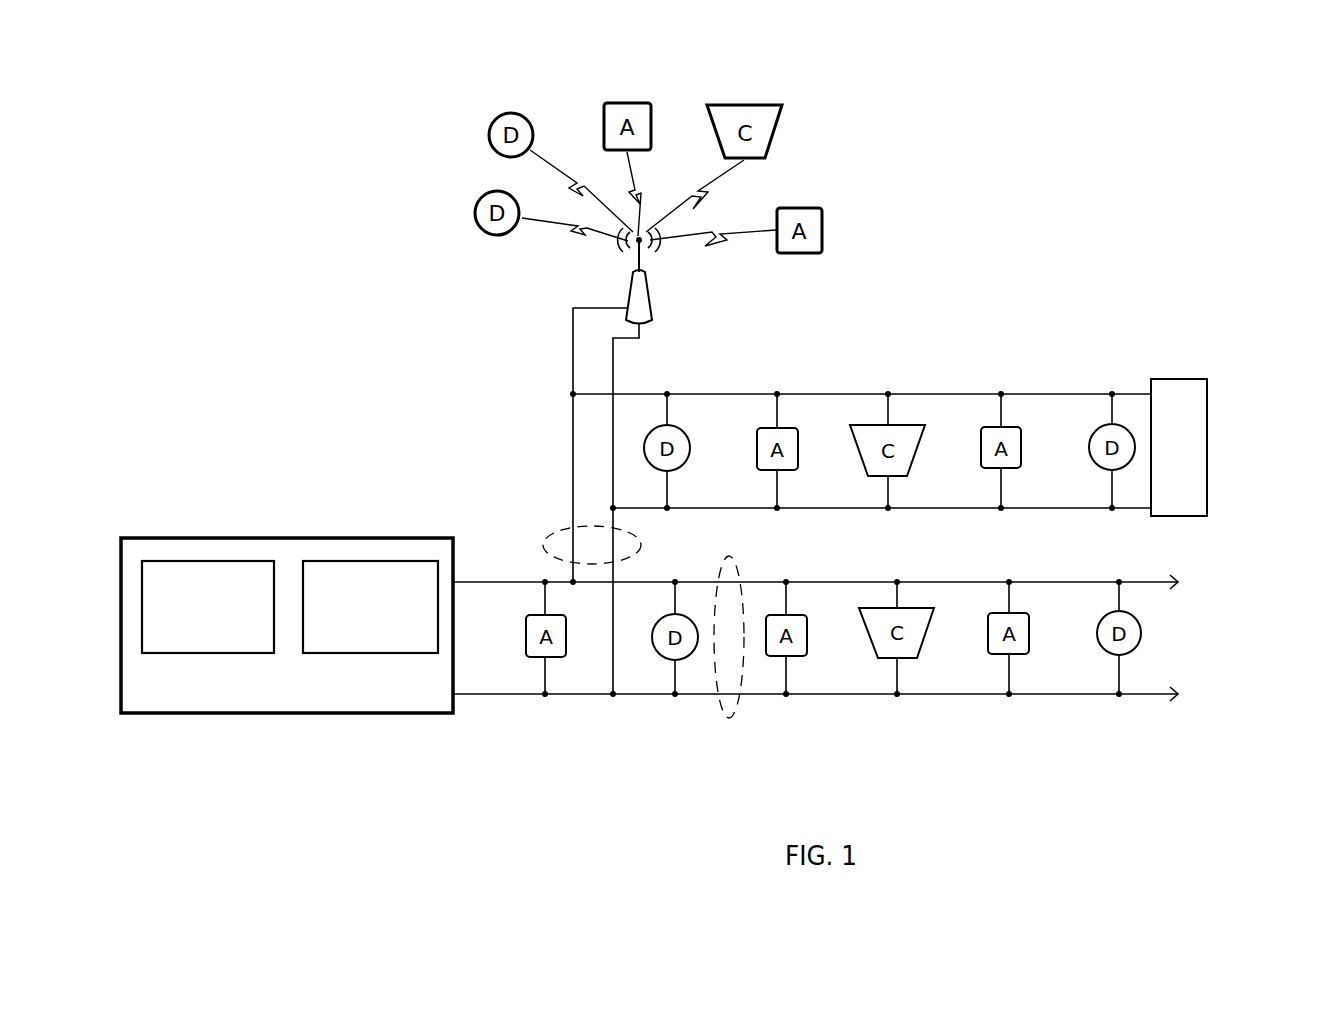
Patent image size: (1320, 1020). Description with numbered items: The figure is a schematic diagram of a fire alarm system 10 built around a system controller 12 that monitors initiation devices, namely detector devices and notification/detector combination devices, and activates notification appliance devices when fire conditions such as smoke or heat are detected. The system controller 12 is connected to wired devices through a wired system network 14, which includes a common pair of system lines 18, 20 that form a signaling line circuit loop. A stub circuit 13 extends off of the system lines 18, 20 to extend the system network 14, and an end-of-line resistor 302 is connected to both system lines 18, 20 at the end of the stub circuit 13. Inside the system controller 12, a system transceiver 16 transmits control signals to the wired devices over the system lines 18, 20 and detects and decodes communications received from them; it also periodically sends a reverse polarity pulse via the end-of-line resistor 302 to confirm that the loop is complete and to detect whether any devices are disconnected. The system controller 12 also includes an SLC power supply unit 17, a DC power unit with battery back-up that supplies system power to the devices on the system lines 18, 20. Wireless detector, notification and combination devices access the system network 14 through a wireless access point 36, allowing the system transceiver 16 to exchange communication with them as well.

The fire alarm system 10 is at (318, 50).
The system controller 12 is at (386, 692).
The stub circuit 13 is at (565, 525).
The wired system network 14 is at (740, 712).
The system transceiver 16 is at (198, 639).
The SLC power supply unit 17 is at (361, 639).
The system line 18 is at (598, 308).
The system line 20 is at (613, 373).
The wireless access point 36 is at (650, 305).
The end-of-line resistor 302 is at (1207, 425).